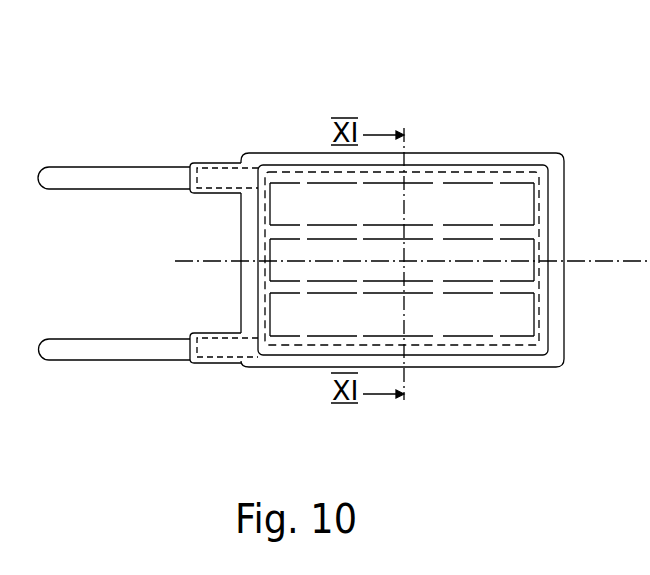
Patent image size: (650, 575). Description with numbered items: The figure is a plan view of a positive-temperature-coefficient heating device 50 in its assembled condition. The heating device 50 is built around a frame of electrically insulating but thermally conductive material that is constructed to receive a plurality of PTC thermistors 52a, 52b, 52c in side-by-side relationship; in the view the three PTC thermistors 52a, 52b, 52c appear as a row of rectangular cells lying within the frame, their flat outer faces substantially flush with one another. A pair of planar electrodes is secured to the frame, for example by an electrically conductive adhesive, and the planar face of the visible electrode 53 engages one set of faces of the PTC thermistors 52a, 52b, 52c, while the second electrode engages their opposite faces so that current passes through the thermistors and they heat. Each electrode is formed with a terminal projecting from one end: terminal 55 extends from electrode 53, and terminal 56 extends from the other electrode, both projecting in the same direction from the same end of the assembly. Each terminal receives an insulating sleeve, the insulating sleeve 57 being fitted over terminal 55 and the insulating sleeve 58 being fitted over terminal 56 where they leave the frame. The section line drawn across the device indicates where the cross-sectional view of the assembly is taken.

The heating device 50 is at (476, 130).
The PTC thermistor 52a is at (505, 195).
The PTC thermistor 52b is at (418, 268).
The PTC thermistor 52c is at (470, 320).
The planar electrode 53 is at (428, 152).
The terminal 55 is at (88, 180).
The terminal 56 is at (98, 352).
The insulating sleeve 57 is at (210, 185).
The insulating sleeve 58 is at (217, 352).